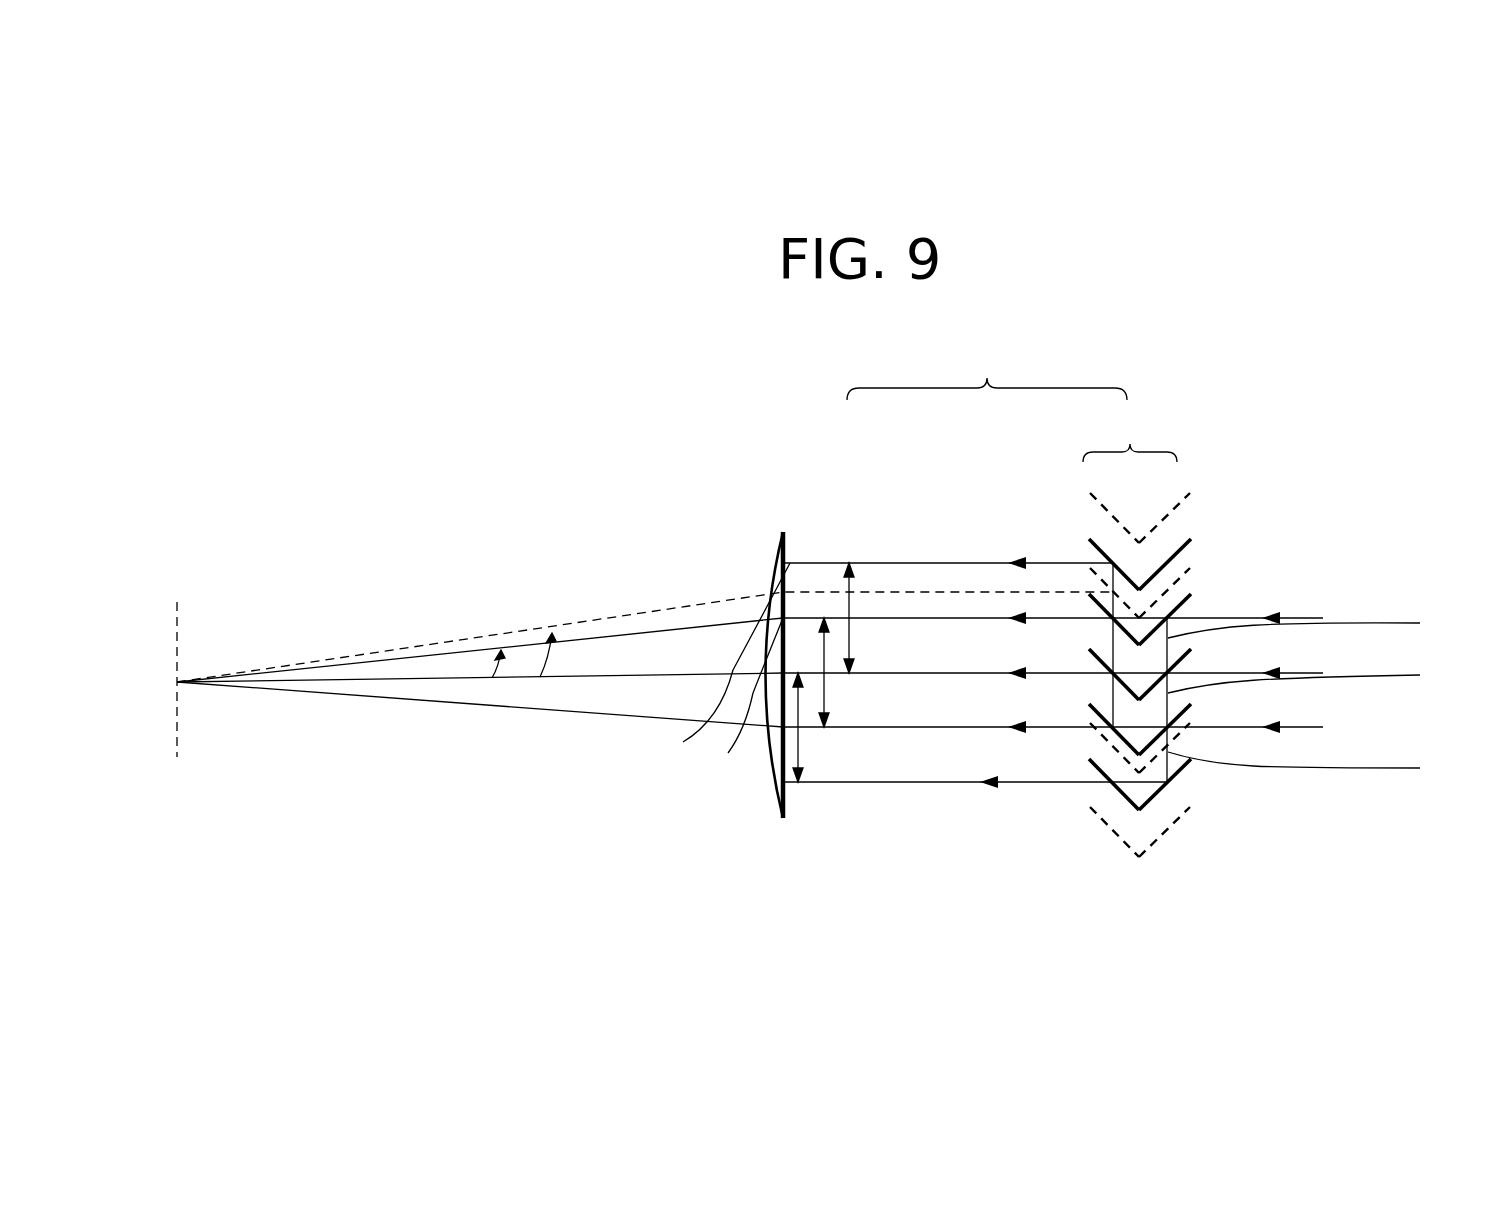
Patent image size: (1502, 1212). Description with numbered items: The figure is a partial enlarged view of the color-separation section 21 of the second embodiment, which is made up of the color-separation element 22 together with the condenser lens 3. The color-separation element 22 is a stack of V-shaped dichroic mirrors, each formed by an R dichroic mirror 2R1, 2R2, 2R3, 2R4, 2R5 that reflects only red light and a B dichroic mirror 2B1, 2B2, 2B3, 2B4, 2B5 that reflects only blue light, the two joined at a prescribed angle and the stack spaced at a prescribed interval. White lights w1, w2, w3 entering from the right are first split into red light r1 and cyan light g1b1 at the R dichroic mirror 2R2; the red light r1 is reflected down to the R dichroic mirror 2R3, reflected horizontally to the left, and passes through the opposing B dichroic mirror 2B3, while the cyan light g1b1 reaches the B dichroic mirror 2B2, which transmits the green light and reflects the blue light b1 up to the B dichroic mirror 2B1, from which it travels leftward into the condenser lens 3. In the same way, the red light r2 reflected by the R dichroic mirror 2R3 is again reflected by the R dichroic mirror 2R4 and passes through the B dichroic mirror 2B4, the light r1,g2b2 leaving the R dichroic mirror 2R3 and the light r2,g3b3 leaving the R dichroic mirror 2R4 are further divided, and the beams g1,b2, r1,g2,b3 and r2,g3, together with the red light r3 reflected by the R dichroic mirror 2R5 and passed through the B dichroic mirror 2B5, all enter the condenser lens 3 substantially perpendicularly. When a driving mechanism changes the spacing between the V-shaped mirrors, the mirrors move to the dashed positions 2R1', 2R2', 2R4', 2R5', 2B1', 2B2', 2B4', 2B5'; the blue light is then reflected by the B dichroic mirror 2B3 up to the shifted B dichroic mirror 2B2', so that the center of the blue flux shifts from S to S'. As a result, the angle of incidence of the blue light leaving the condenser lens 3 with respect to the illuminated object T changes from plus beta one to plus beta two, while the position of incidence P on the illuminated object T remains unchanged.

The condenser lens 3 is at (775, 553).
The color-separation section 21 is at (987, 373).
The color-separation element 22 is at (1130, 436).
The B dichroic mirror 2B1 is at (1057, 535).
The B dichroic mirror 2B2 is at (988, 579).
The B dichroic mirror 2B3 is at (1089, 649).
The B dichroic mirror 2B4 is at (1038, 785).
The B dichroic mirror 2B5 is at (1069, 853).
The shifted B dichroic mirror position 2B1' is at (1053, 492).
The shifted B dichroic mirror position 2B2' is at (1024, 565).
The shifted B dichroic mirror position 2B4' is at (1049, 815).
The shifted B dichroic mirror position 2B5' is at (1113, 877).
The R dichroic mirror 2R1 is at (1219, 544).
The R dichroic mirror 2R2 is at (1221, 610).
The R dichroic mirror 2R3 is at (1191, 649).
The R dichroic mirror 2R4 is at (1221, 719).
The R dichroic mirror 2R5 is at (1221, 784).
The shifted R dichroic mirror position 2R1' is at (1221, 496).
The shifted R dichroic mirror position 2R2' is at (1226, 581).
The shifted R dichroic mirror position 2R4' is at (1224, 748).
The shifted R dichroic mirror position 2R5' is at (1224, 832).
The position of incidence P is at (633, 659).
The illuminated object T is at (177, 742).
The center position of light flux S is at (743, 697).
The shifted center position of light flux S' is at (719, 670).
The white light w1 is at (1308, 613).
The white light w2 is at (1308, 672).
The white light w3 is at (1308, 727).
The red light r1 is at (1310, 619).
The red light r2 is at (1310, 674).
The red light r3 is at (1310, 767).
The blue light b1 is at (830, 563).
The cyan light g1b1 is at (1140, 641).
The green light and blue light g1,b2 is at (798, 615).
The red light and green light r2,g3 is at (922, 727).
The red, green and blue light r1,g2,b3 is at (993, 673).
The red light and cyan light r1,g2b2 is at (1133, 673).
The red light and cyan light r2,g3b3 is at (1152, 723).